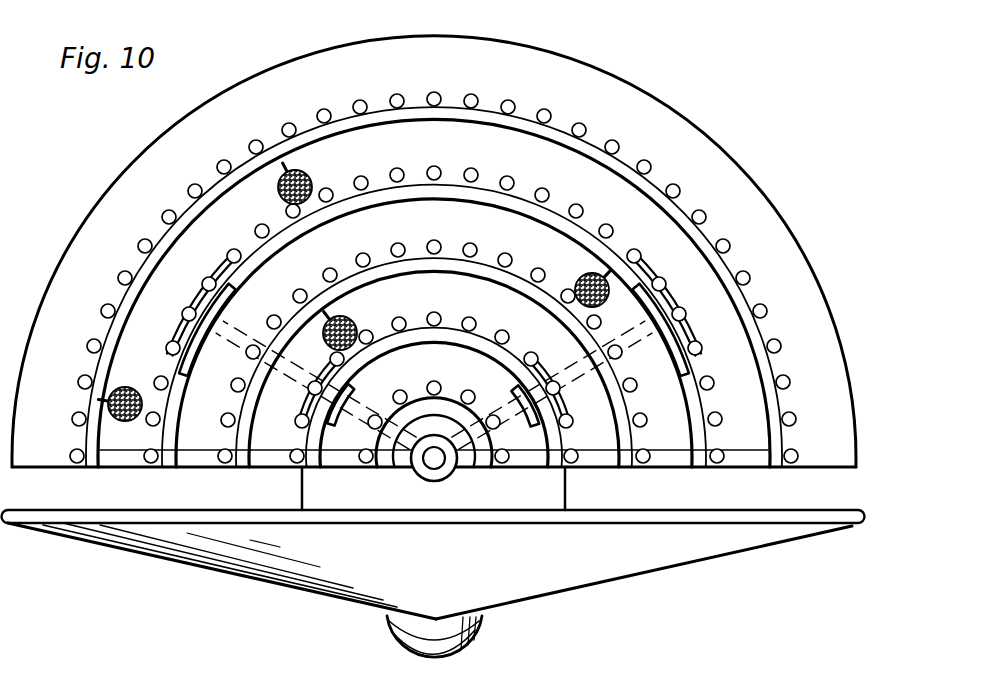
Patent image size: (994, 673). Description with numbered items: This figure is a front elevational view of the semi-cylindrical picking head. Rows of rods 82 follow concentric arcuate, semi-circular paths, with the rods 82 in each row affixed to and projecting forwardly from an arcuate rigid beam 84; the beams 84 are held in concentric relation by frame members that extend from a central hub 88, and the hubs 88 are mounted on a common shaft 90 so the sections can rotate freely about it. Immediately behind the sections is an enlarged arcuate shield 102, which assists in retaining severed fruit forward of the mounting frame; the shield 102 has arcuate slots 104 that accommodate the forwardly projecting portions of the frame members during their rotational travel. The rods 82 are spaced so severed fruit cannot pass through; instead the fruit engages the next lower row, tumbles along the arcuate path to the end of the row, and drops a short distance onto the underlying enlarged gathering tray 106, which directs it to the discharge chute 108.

The rods 82 is at (471, 182).
The arcuate rigid beam 84 is at (582, 235).
The central hub 88 is at (448, 473).
The shaft 90 is at (432, 460).
The arcuate shield 102 is at (742, 183).
The arcuate slots 104 is at (237, 293).
The gathering tray 106 is at (582, 575).
The discharge chute 108 is at (455, 640).